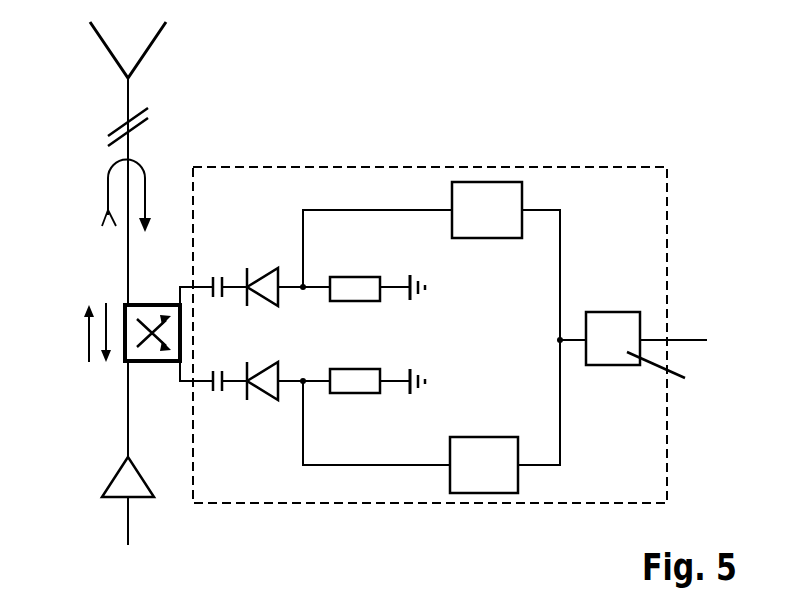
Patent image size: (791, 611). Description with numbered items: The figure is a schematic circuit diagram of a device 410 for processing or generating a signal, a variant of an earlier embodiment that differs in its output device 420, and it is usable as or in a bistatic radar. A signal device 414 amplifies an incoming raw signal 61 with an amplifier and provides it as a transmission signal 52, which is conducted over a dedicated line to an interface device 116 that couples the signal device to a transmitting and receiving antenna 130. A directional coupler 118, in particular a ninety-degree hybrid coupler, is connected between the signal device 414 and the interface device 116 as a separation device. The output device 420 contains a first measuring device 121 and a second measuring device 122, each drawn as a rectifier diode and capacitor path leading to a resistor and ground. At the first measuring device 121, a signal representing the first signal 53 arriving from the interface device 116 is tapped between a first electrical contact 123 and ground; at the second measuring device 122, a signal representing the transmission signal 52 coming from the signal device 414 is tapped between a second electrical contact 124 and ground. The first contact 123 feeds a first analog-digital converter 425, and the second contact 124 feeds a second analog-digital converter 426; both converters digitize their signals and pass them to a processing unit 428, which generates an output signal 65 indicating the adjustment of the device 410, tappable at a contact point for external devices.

The transmitting and receiving antenna 130 is at (127, 90).
The interface device 116 is at (127, 120).
The first signal 53 is at (148, 176).
The transmission signal 52 is at (108, 185).
The directional coupler 118 is at (128, 305).
The signal device 414 is at (105, 483).
The raw signal 61 is at (125, 530).
The device 410 is at (289, 118).
The output device 420 is at (593, 168).
The second electrical contact 124 is at (303, 268).
The second measuring device 122 is at (390, 287).
The second analog-digital converter 426 is at (487, 238).
The first electrical contact 123 is at (300, 400).
The first measuring device 121 is at (390, 381).
The first analog-digital converter 425 is at (488, 437).
The processing unit 428 is at (610, 312).
The output signal 65 is at (694, 340).